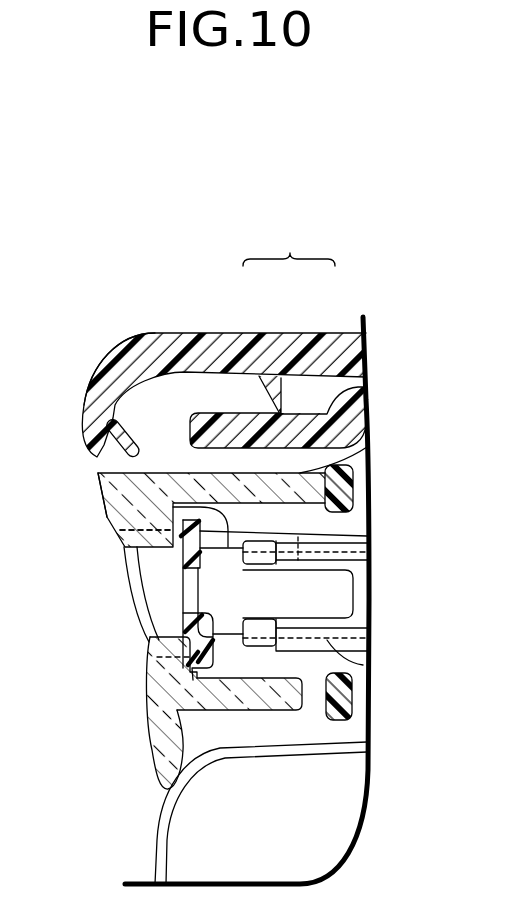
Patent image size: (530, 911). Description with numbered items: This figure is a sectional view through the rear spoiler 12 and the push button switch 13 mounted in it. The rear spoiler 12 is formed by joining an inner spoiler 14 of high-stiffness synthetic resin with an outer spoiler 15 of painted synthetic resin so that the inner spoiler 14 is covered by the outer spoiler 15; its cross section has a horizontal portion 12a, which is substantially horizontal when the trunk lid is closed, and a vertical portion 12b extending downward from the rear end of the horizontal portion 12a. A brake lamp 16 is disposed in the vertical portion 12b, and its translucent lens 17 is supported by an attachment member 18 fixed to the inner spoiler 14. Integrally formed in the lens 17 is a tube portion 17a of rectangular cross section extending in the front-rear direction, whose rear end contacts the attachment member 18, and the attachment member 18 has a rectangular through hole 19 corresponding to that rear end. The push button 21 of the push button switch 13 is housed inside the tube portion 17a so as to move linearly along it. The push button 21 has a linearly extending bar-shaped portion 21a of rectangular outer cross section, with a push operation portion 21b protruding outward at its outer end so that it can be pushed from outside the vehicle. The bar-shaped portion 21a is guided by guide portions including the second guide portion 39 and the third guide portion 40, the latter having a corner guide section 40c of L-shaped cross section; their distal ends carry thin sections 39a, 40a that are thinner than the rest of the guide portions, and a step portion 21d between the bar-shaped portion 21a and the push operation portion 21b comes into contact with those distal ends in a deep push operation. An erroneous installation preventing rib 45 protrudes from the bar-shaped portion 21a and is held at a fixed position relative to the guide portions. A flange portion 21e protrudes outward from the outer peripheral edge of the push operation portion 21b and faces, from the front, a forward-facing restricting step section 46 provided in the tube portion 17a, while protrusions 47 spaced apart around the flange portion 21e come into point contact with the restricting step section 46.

The rear spoiler 12 is at (289, 244).
The horizontal portion 12a is at (160, 347).
The vertical portion 12b is at (85, 414).
The push button switch 13 is at (298, 522).
The inner spoiler 14 is at (315, 422).
The outer spoiler 15 is at (287, 338).
The brake lamp 16 is at (136, 753).
The lens 17 is at (107, 527).
The tube portion 17a is at (217, 713).
The attachment member 18 is at (357, 487).
The through hole 19 is at (345, 675).
The push button 21 is at (118, 619).
The bar-shaped portion 21a is at (327, 592).
The push operation portion 21b is at (127, 583).
The step portion 21d is at (130, 496).
The flange portion 21e is at (193, 690).
The second guide portion 39 is at (330, 537).
The thin section 39a is at (258, 540).
The third guide portion 40 is at (306, 662).
The thin section 40a is at (263, 648).
The corner guide section 40c is at (363, 665).
The erroneous installation preventing rib 45 is at (230, 533).
The restricting step section 46 is at (190, 614).
The protrusions 47 is at (160, 523).